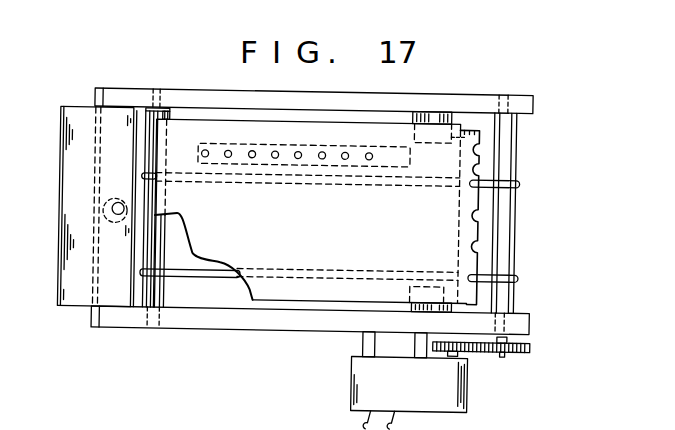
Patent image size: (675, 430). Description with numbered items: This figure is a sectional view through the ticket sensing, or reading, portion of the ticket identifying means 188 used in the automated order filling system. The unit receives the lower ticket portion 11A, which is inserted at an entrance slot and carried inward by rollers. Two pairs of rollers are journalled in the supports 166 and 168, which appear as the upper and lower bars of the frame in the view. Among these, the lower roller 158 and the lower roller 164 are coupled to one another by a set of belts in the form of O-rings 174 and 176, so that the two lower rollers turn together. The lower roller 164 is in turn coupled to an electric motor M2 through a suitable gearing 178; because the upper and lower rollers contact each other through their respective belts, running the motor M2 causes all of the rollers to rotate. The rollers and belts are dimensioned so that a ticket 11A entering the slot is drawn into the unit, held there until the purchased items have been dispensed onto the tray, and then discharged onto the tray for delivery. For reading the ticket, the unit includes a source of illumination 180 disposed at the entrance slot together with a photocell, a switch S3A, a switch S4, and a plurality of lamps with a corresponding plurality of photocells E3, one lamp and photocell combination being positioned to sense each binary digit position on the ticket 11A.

The support 166 is at (206, 88).
The support 168 is at (276, 330).
The ticket identifying means 188 is at (535, 90).
The source of illumination 180 is at (112, 222).
The lower roller 158 is at (160, 240).
The lower ticket portion 11A is at (348, 249).
The switch S3A is at (441, 112).
The switch S4 is at (413, 286).
The photocells E3 is at (478, 155).
The O-ring 174 is at (521, 184).
The O-ring 176 is at (522, 278).
The lower roller 164 is at (500, 240).
The gearing 178 is at (500, 354).
The electric motor M2 is at (428, 398).